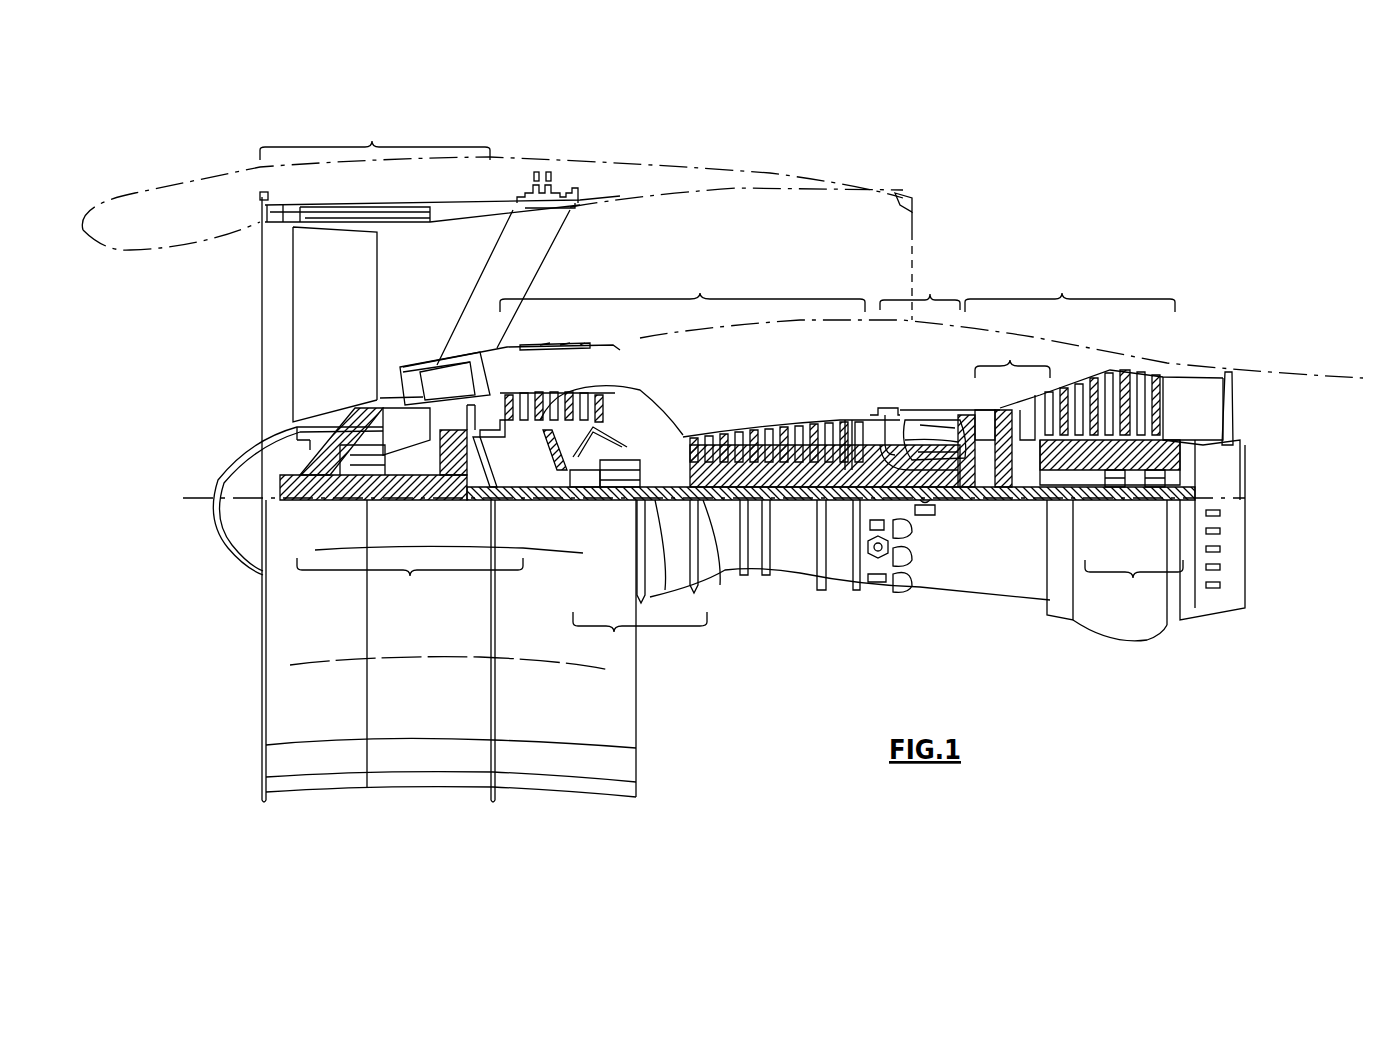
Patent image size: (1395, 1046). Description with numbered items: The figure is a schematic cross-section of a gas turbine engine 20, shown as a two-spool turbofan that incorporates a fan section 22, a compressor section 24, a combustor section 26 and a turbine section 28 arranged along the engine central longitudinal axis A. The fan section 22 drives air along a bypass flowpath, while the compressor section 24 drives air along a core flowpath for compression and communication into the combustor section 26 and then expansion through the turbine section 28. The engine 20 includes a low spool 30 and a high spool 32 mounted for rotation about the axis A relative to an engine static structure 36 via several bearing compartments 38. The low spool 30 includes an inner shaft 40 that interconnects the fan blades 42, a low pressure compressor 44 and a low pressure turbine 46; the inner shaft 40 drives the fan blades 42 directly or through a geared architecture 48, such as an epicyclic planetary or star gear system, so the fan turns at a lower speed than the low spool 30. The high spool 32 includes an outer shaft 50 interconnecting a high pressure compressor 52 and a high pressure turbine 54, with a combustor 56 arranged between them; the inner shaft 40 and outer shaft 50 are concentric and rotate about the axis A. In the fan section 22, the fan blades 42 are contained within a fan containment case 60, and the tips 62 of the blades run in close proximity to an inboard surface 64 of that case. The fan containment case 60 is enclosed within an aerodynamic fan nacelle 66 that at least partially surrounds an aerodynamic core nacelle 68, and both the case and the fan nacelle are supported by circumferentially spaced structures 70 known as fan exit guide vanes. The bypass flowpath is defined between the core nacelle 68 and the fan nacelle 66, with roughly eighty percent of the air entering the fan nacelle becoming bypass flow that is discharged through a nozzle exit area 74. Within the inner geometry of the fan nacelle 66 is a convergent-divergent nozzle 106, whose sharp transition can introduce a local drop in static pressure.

The gas turbine engine 20 is at (1029, 246).
The fan section 22 is at (375, 137).
The compressor section 24 is at (682, 290).
The combustor section 26 is at (920, 288).
The turbine section 28 is at (1070, 289).
The low spool 30 is at (802, 520).
The high spool 32 is at (840, 420).
The engine static structure 36 is at (843, 605).
The bearing compartments 38 is at (722, 568).
The inner shaft 40 is at (655, 588).
The fan blades 42 is at (335, 324).
The low pressure compressor 44 is at (565, 393).
The low pressure turbine 46 is at (1110, 390).
The geared architecture 48 is at (455, 485).
The outer shaft 50 is at (926, 500).
The high pressure compressor 52 is at (763, 440).
The high pressure turbine 54 is at (985, 410).
The combustor 56 is at (917, 437).
The fan containment case 60 is at (497, 200).
The tips 62 is at (322, 230).
The inboard surface 64 is at (396, 230).
The aerodynamic fan nacelle 66 is at (731, 174).
The aerodynamic core nacelle 68 is at (1230, 362).
The circumferentially spaced structures 70 is at (545, 250).
The nozzle exit area 74 is at (914, 228).
The convergent-divergent nozzle 106 is at (914, 205).
The engine central longitudinal axis A is at (200, 500).